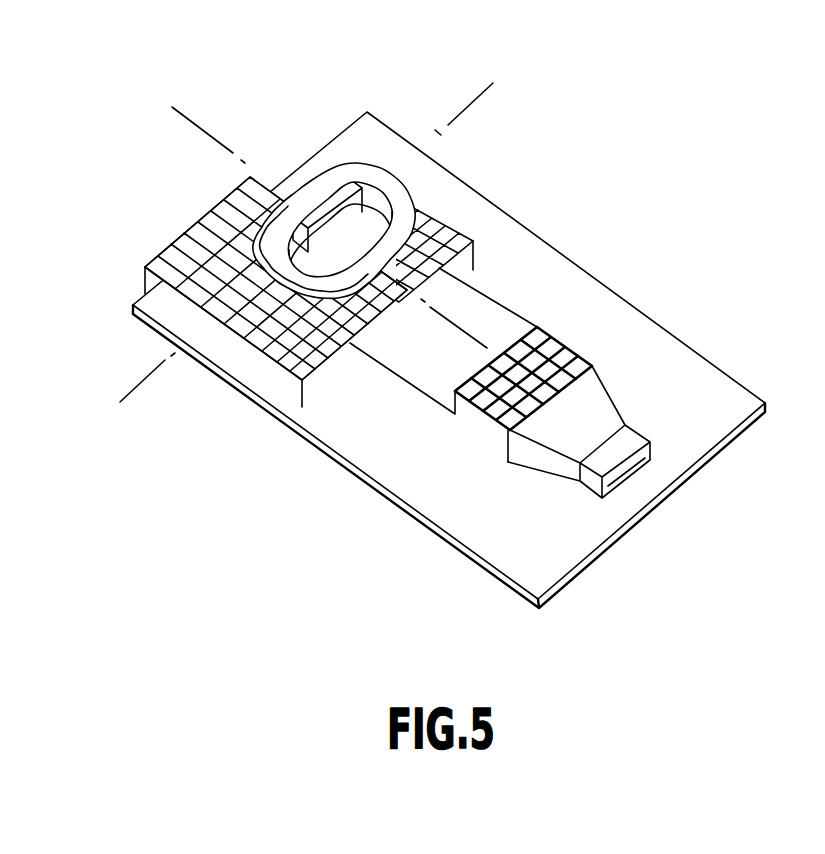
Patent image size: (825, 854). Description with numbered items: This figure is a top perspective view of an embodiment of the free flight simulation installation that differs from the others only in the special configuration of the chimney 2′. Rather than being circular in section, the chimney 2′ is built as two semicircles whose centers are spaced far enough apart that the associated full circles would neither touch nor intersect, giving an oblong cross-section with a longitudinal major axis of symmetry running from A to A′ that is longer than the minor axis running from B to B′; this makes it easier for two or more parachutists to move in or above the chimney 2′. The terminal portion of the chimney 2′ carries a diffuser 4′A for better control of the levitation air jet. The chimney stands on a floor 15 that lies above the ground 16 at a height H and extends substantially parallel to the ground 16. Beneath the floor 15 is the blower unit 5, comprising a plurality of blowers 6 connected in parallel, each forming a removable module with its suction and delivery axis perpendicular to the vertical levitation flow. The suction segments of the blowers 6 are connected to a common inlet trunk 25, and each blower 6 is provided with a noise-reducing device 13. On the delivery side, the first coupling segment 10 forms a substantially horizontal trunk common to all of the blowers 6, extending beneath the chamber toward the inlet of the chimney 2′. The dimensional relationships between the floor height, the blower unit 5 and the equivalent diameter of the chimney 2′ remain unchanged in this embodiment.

The blower unit 5 is at (612, 352).
The ground 16 is at (485, 528).
The floor 15 is at (287, 358).
The chimney 2′ is at (420, 226).
The diffuser 4′A is at (364, 174).
The first coupling segment 10 is at (410, 371).
The blower 6 is at (555, 353).
The noise-reducing device 13 is at (467, 420).
The common inlet trunk 25 is at (594, 414).
The major axis end A is at (478, 98).
The minor axis end B is at (193, 122).
The major axis end A′ is at (142, 383).
The minor axis end B′ is at (467, 340).